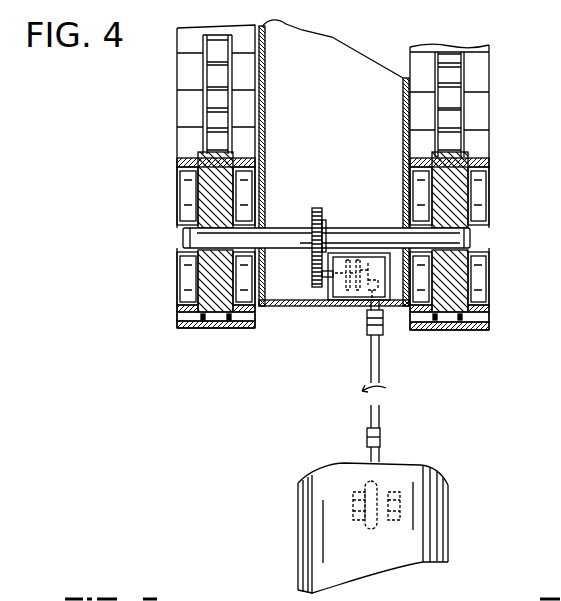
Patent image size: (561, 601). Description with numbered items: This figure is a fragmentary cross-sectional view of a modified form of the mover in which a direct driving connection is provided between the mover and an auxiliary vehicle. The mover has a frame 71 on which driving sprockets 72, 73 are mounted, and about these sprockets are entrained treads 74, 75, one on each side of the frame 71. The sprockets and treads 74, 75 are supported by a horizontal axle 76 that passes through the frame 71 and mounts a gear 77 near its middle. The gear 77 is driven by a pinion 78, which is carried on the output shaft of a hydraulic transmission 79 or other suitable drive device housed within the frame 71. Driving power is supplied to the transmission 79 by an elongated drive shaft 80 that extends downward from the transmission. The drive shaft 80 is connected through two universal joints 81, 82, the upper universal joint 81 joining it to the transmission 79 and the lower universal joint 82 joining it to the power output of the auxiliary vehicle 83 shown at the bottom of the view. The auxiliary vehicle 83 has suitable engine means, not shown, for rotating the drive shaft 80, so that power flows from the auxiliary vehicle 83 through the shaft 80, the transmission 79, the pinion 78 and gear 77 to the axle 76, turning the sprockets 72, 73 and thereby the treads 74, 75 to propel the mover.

The frame 71 is at (341, 88).
The driving sprocket 72 is at (207, 270).
The driving sprocket 73 is at (462, 188).
The tread 74 is at (183, 68).
The tread 75 is at (478, 72).
The axle 76 is at (293, 227).
The gear 77 is at (321, 216).
The pinion 78 is at (312, 277).
The hydraulic transmission 79 is at (350, 297).
The drive shaft 80 is at (380, 367).
The universal joint 81 is at (368, 329).
The universal joint 82 is at (367, 436).
The auxiliary vehicle 83 is at (440, 488).